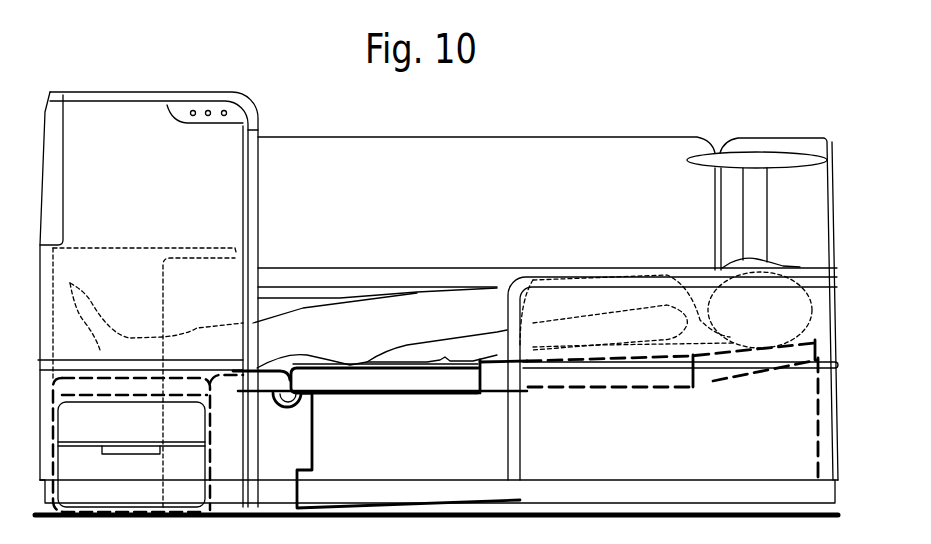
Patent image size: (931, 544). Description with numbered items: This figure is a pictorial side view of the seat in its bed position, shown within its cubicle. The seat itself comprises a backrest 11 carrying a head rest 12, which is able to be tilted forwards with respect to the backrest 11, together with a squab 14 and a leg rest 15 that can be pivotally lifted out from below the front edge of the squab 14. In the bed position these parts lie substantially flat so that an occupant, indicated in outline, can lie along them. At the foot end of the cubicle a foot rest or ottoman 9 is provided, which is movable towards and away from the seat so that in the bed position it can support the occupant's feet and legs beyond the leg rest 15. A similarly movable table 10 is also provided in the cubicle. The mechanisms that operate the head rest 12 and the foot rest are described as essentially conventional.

The foot rest or ottoman 9 is at (180, 367).
The table 10 is at (131, 272).
The backrest 11 is at (602, 380).
The head rest 12 is at (740, 380).
The squab 14 is at (405, 380).
The leg rest 15 is at (267, 380).